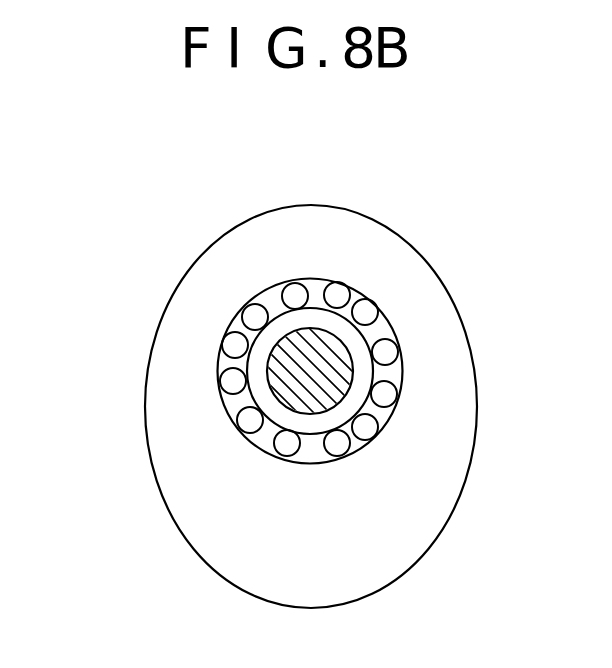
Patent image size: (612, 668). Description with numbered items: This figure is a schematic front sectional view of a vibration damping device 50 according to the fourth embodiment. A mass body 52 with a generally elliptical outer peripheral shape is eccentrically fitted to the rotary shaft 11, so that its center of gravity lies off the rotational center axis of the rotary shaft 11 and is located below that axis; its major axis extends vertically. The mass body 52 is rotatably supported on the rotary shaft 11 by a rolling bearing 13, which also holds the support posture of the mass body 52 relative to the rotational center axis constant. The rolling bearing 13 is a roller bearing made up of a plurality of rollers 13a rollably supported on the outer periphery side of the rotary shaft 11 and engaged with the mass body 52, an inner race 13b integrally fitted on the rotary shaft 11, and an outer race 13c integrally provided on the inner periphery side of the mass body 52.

The vibration damping device 50 is at (394, 164).
The mass body 52 is at (292, 205).
The rolling bearing 13 is at (230, 315).
The rollers 13a is at (343, 283).
The inner race 13b is at (232, 397).
The outer race 13c is at (222, 363).
The rotary shaft 11 is at (345, 375).